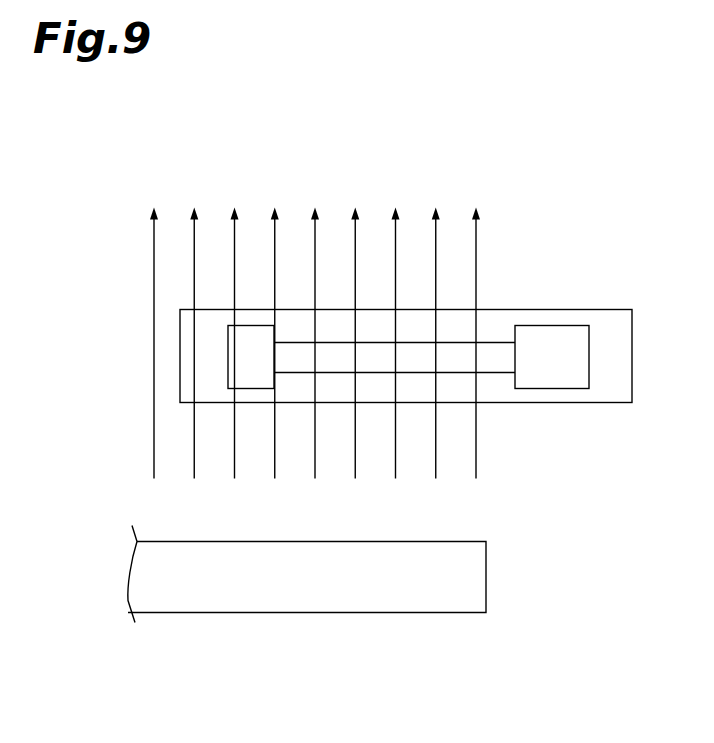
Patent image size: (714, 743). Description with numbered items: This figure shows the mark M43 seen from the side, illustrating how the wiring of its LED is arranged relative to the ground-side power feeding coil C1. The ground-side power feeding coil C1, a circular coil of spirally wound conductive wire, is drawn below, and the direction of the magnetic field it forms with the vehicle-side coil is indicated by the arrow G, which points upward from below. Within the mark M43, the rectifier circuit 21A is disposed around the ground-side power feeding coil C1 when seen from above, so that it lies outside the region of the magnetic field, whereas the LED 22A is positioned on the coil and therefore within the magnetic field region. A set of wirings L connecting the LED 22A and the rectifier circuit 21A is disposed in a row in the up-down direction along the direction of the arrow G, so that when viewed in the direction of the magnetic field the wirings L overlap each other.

The arrow indicating direction of the magnetic field G is at (194, 262).
The mark M43 is at (592, 308).
The LED 22A is at (247, 325).
The rectifier circuit 21A is at (570, 388).
The wirings L is at (448, 343).
The ground-side power feeding coil C1 is at (486, 590).